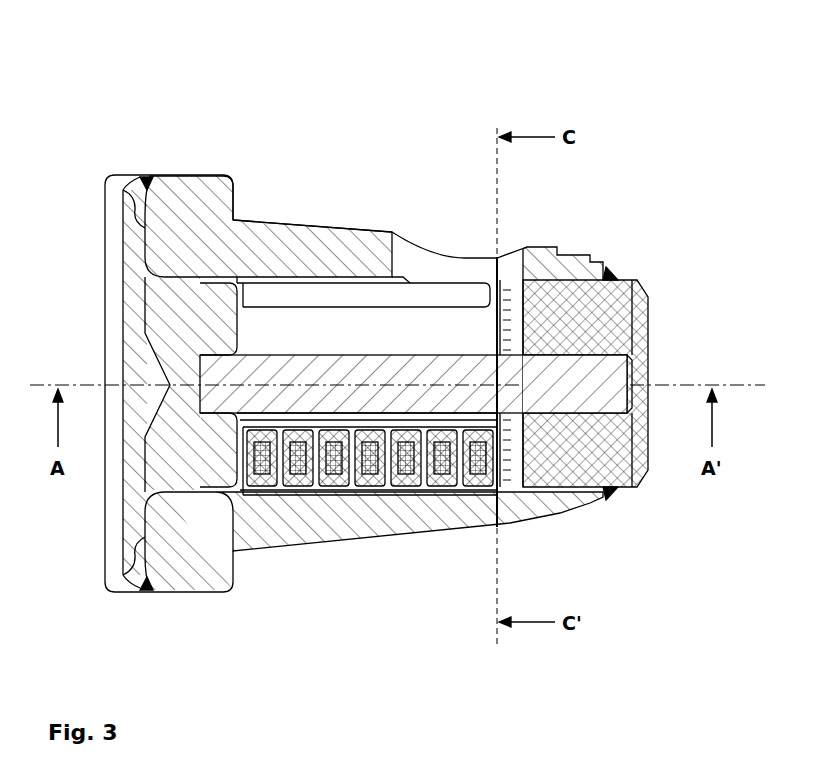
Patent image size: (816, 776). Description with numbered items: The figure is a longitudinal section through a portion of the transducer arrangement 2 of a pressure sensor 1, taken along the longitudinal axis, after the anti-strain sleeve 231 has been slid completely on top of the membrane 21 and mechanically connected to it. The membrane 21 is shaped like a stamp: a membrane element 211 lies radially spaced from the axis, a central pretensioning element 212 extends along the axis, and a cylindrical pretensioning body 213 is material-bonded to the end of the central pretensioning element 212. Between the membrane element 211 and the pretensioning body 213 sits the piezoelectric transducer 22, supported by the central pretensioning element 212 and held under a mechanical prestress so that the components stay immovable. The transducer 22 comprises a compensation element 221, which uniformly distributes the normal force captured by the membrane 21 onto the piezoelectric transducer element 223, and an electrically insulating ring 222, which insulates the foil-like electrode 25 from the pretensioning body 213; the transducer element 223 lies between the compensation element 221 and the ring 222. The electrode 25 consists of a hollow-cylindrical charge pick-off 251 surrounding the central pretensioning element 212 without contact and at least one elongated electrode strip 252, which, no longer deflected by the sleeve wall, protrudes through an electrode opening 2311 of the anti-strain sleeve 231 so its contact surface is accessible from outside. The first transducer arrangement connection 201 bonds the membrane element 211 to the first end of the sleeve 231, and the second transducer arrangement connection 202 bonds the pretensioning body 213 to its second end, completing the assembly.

The pressure sensor 1 is at (402, 98).
The transducer arrangement 2 is at (387, 380).
The membrane 21 is at (262, 177).
The membrane element 211 is at (128, 182).
The central pretensioning element 212 is at (330, 372).
The pretensioning body 213 is at (632, 308).
The piezoelectric transducer 22 is at (390, 526).
The compensation element 221 is at (220, 475).
The electrically insulating ring 222 is at (517, 460).
The piezoelectric transducer element 223 is at (355, 473).
The anti-strain sleeve 231 is at (313, 237).
The electrode opening 2311 is at (425, 262).
The electrode 25 is at (562, 232).
The charge pick-off 251 is at (495, 343).
The electrode strip 252 is at (500, 223).
The first transducer arrangement connection 201 is at (147, 593).
The second transducer arrangement connection 202 is at (610, 275).